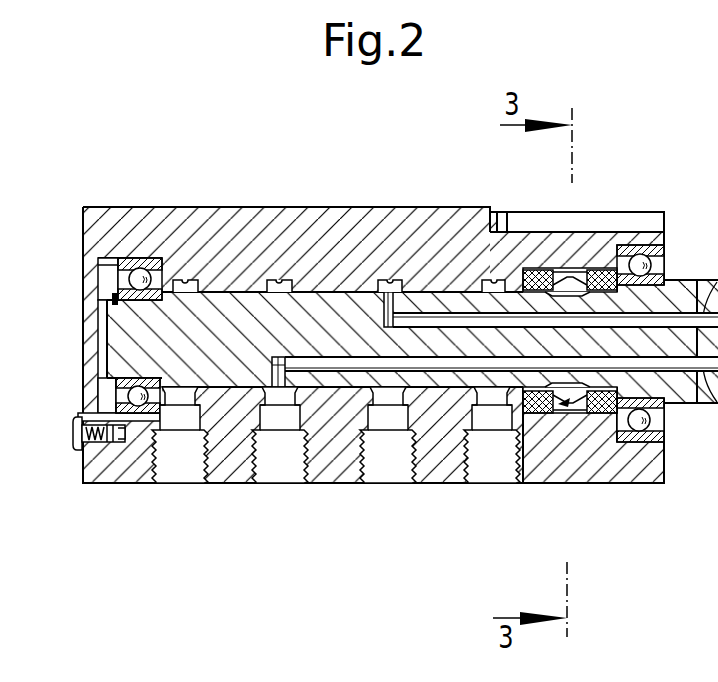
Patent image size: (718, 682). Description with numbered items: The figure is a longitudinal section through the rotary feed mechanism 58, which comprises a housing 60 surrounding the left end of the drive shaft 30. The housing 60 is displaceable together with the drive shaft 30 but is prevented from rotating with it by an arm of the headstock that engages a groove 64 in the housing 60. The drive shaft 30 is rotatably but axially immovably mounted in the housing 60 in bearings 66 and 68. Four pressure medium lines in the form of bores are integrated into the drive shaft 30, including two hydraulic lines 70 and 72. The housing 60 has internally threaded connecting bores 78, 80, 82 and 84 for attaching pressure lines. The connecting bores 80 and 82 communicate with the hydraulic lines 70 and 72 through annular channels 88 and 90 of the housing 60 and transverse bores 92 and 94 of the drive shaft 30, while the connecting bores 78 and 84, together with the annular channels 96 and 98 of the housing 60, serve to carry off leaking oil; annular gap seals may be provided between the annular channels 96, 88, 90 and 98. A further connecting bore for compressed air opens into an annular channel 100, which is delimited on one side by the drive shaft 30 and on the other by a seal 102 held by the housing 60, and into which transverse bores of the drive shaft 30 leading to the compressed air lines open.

The drive shaft 30 is at (223, 300).
The rotary feed mechanism 58 is at (284, 196).
The housing 60 is at (205, 200).
The groove 64 is at (500, 212).
The bearing 66 is at (640, 262).
The bearing 68 is at (141, 275).
The hydraulic line 70 is at (690, 318).
The hydraulic line 72 is at (690, 374).
The connecting bore 78 is at (165, 477).
The connecting bore 80 is at (256, 463).
The connecting bore 82 is at (365, 461).
The connecting bore 84 is at (469, 461).
The annular channel 88 is at (281, 280).
The annular channel 90 is at (391, 280).
The transverse bore 92 is at (266, 385).
The transverse bore 94 is at (362, 300).
The annular channel 96 is at (185, 281).
The annular channel 98 is at (486, 280).
The annular channel 100 is at (553, 412).
The seal 102 is at (602, 412).